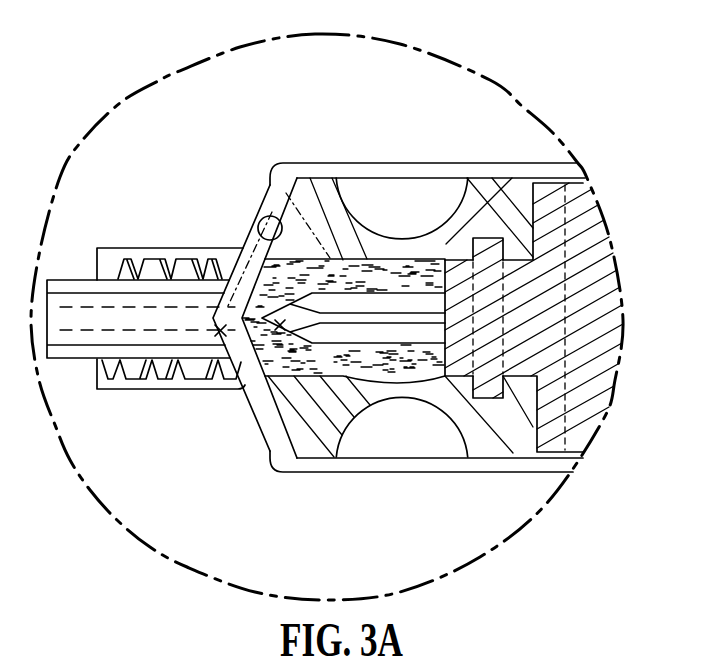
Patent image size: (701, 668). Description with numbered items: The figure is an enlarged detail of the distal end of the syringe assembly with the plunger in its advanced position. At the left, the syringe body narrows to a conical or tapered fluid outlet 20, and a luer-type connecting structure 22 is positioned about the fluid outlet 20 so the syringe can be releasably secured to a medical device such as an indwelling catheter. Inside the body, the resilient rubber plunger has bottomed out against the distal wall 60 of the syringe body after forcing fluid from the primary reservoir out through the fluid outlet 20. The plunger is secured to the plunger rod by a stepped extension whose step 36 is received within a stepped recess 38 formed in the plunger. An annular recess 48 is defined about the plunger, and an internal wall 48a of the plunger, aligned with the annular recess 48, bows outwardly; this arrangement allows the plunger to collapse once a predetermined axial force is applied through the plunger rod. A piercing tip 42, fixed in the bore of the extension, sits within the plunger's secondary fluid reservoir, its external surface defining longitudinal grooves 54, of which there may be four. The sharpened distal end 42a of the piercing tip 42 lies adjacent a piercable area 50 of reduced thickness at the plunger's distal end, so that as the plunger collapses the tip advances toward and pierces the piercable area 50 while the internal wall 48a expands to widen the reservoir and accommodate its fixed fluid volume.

The fluid outlet 20 is at (136, 351).
The connecting structure 22 is at (118, 250).
The step 36 is at (490, 240).
The stepped recess 38 is at (518, 262).
The piercing tip 42 is at (335, 343).
The sharpened distal end 42a is at (280, 325).
The annular recess 48 is at (386, 197).
The internal wall 48a is at (387, 258).
The piercable area 50 is at (220, 330).
The longitudinal grooves 54 is at (413, 328).
The distal wall 60 is at (270, 216).